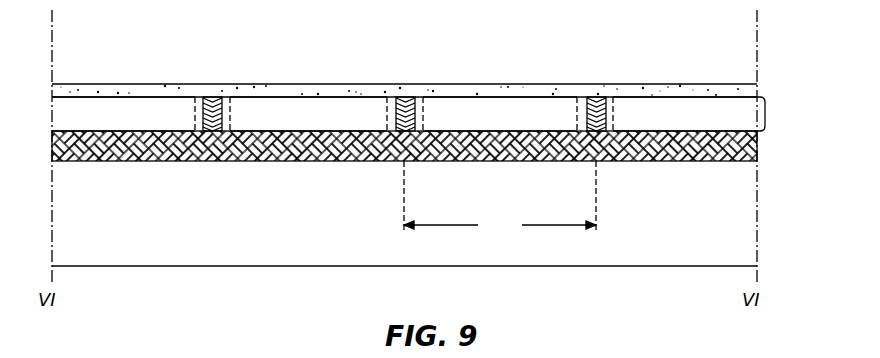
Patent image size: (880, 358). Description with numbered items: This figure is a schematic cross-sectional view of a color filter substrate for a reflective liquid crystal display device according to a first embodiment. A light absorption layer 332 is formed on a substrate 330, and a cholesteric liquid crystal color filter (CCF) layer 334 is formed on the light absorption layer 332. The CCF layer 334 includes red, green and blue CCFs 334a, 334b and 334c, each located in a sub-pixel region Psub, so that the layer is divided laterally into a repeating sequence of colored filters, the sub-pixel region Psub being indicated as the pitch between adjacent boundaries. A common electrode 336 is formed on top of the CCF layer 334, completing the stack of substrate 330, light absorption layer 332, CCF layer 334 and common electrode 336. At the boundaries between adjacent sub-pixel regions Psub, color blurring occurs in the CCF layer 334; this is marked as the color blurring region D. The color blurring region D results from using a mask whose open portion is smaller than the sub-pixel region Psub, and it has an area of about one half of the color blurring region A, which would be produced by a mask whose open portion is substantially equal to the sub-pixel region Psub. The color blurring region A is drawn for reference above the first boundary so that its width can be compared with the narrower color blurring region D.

The substrate 330 is at (740, 192).
The light absorption layer 332 is at (752, 148).
The cholesteric liquid crystal color filter layer 334 is at (427, 147).
The red CCF 334a is at (120, 113).
The green CCF 334b is at (293, 113).
The blue CCF 334c is at (490, 113).
The common electrode 336 is at (325, 84).
The color blurring region A is at (230, 84).
The color blurring region D is at (212, 147).
The sub-pixel region Psub is at (500, 199).